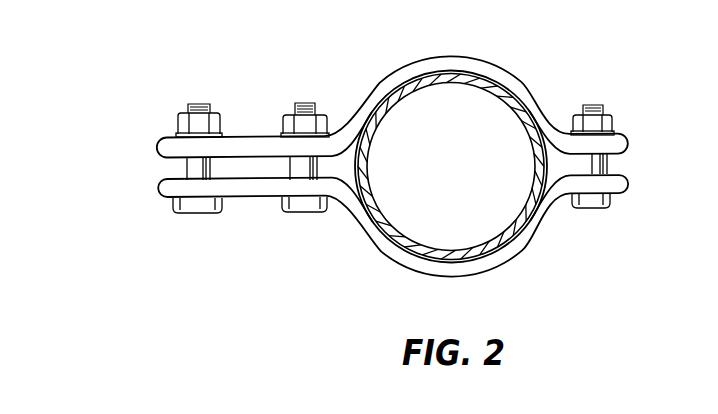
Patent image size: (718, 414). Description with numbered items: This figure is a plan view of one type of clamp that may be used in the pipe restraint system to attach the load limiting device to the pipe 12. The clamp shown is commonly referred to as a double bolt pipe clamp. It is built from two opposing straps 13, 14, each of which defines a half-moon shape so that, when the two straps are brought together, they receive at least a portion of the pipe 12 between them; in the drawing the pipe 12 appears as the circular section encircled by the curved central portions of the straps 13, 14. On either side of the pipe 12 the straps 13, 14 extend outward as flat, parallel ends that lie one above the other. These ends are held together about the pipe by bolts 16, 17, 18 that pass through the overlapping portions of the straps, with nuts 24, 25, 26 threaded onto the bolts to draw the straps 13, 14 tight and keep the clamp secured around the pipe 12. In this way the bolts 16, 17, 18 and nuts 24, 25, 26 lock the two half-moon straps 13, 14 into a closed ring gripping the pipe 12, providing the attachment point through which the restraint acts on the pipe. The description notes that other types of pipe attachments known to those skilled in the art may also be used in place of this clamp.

The pipe 12 is at (361, 218).
The strap 13 is at (507, 71).
The strap 14 is at (525, 239).
The bolt 16 is at (192, 166).
The bolt 17 is at (300, 165).
The bolt 18 is at (596, 165).
The nut 24 is at (180, 122).
The nut 25 is at (326, 122).
The nut 26 is at (608, 124).